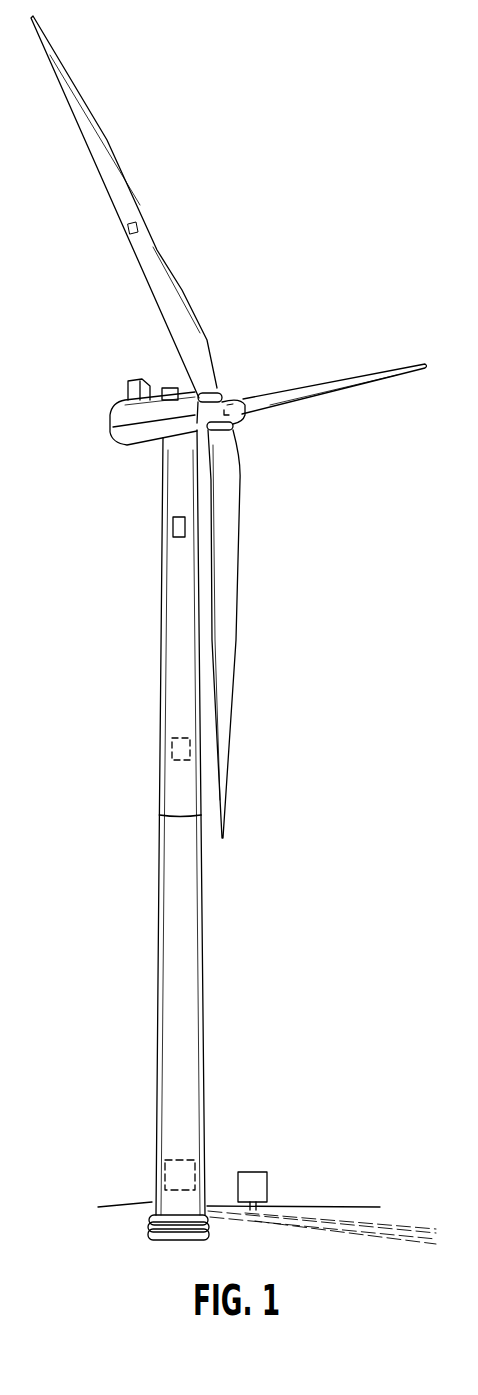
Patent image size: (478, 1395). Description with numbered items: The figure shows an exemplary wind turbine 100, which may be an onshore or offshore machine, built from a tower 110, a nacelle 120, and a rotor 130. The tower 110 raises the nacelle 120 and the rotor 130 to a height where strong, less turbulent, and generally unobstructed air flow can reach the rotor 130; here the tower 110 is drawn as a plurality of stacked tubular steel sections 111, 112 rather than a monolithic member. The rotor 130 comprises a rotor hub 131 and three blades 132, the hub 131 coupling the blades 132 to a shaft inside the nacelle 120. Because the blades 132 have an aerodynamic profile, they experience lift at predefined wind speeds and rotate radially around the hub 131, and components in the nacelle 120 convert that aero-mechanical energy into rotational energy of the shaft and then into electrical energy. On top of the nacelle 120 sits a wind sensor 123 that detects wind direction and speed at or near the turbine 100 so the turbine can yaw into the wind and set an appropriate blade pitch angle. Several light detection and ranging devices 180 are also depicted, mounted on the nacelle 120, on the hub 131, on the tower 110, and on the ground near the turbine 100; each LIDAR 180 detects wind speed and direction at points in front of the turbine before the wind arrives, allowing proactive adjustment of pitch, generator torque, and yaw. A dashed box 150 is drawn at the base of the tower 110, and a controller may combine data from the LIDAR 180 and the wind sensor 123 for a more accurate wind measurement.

The wind turbine 100 is at (356, 256).
The tower 110 is at (155, 693).
The tubular steel section 111 is at (160, 1006).
The tubular steel section 112 is at (165, 604).
The nacelle 120 is at (105, 422).
The wind sensor 123 is at (136, 380).
The rotor 130 is at (240, 422).
The rotor hub 131 is at (227, 394).
The blade 132 is at (72, 110).
The turbine controller 150 is at (165, 1170).
The light detection and ranging (LIDAR) device 180 is at (172, 747).